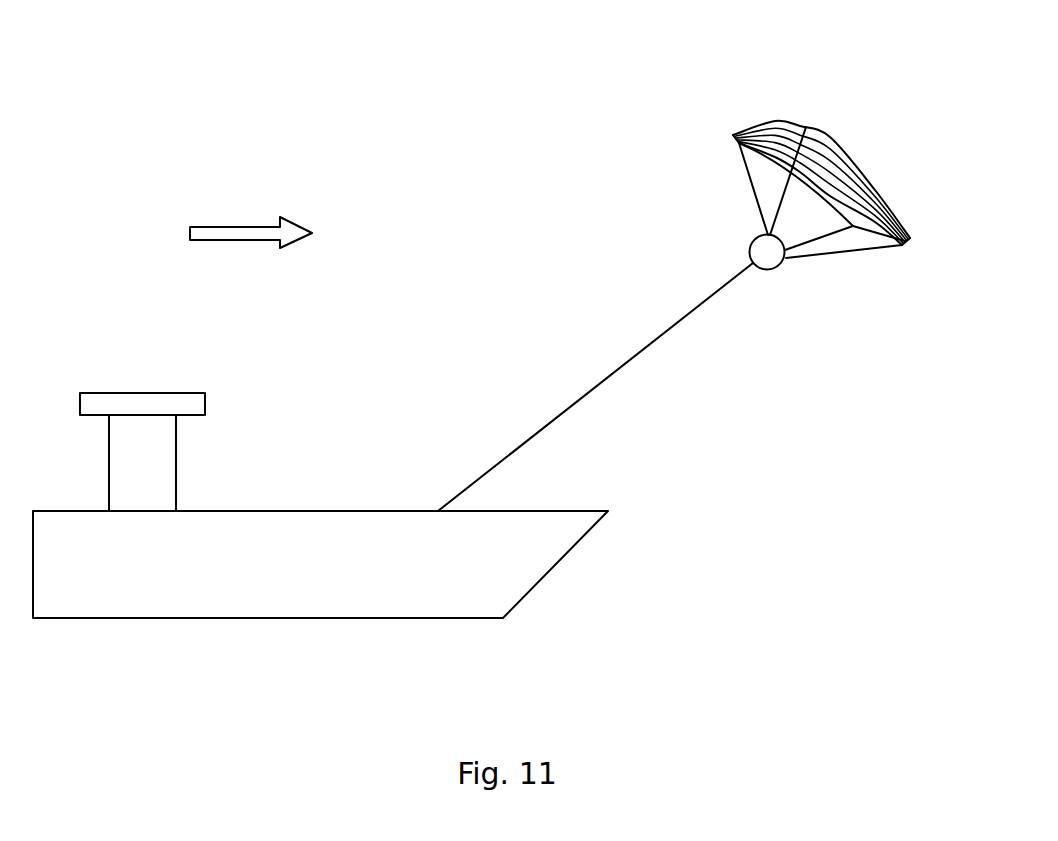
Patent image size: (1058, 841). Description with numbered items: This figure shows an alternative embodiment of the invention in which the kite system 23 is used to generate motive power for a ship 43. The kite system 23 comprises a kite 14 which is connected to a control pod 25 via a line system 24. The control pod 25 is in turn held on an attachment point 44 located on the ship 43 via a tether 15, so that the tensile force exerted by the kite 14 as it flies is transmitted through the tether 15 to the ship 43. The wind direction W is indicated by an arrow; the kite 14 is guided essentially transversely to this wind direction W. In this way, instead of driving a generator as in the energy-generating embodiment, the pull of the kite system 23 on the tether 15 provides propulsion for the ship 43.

The kite system 23 is at (792, 181).
The kite 14 is at (860, 163).
The line system 24 is at (750, 188).
The control pod 25 is at (775, 267).
The tether 15 is at (595, 385).
The ship 43 is at (233, 511).
The attachment point 44 is at (438, 510).
The wind direction W is at (238, 228).